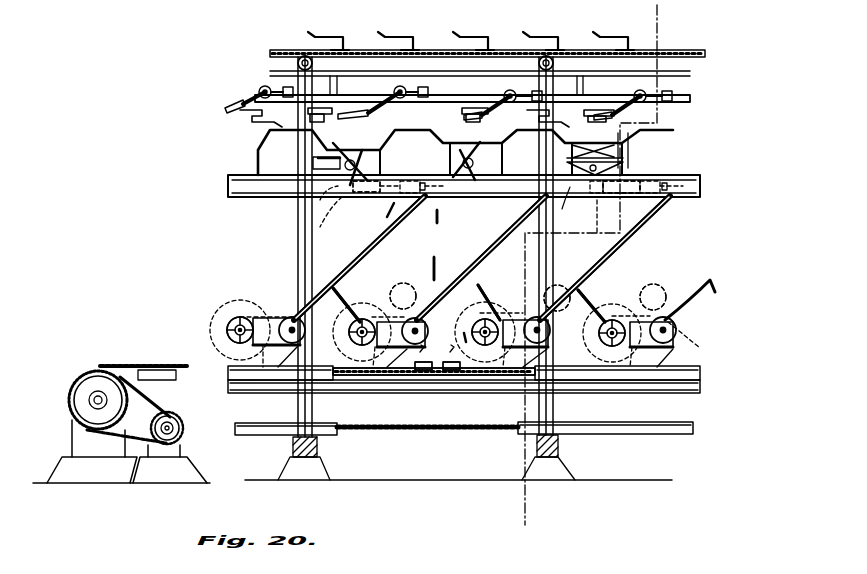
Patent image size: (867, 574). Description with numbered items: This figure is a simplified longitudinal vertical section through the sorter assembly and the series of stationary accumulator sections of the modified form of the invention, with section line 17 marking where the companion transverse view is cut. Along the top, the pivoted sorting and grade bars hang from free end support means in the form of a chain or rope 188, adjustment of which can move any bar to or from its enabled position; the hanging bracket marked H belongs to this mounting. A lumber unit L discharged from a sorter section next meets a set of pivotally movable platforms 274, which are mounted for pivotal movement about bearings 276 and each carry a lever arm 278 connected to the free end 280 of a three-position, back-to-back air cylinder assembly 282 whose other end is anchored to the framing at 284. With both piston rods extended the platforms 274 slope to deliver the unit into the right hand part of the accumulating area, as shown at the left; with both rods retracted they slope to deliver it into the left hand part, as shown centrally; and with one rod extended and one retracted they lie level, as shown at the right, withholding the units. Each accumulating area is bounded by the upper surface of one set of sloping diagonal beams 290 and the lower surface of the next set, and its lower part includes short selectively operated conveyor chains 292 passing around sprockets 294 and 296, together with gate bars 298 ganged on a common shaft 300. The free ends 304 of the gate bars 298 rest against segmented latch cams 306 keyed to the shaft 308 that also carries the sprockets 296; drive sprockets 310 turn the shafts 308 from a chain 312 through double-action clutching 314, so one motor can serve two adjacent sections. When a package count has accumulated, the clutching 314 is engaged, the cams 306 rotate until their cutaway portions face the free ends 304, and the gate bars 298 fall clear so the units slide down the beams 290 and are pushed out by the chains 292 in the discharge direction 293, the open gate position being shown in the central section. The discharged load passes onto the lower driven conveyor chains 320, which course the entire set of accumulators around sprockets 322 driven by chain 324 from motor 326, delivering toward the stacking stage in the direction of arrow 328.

The section line 17— 17 is at (641, 19).
The chain or rope 188 is at (335, 78).
The hanger bracket H is at (373, 125).
The lumber unit L is at (596, 127).
The pivotally movable platforms 274 is at (318, 170).
The bearings 276 is at (320, 218).
The lever arm 278 is at (346, 166).
The free end of air cylinder assembly 280 is at (318, 234).
The three-position back-to-back air cylinder assembly 282 is at (402, 183).
The framing anchor 284 is at (698, 182).
The sloping diagonal beams 290 is at (364, 255).
The conveyor chains 292 is at (406, 293).
The discharge direction 293 is at (513, 300).
The sprockets 294 is at (419, 345).
The sprockets 296 is at (339, 338).
The gate bars 298 is at (337, 298).
The common shaft 300 is at (347, 284).
The free ends of gate bars 304 is at (348, 314).
The latch cam 306 is at (239, 343).
The shaft 308 is at (349, 326).
The drive sprockets 310 is at (476, 300).
The chain 312 is at (405, 283).
The double-action clutching 314 is at (672, 286).
The lower driven conveyor chains 320 is at (112, 365).
The sprockets 322 is at (72, 400).
The chain 324 is at (150, 408).
The motor 326 is at (184, 426).
The delivery direction arrow 328 is at (153, 364).